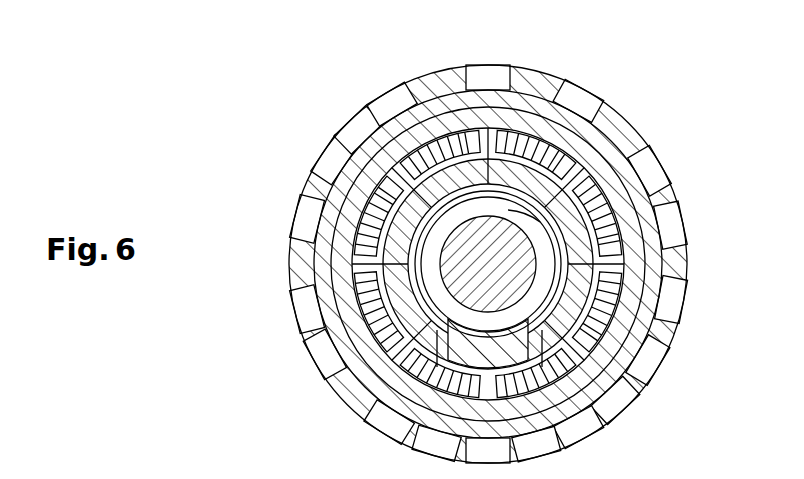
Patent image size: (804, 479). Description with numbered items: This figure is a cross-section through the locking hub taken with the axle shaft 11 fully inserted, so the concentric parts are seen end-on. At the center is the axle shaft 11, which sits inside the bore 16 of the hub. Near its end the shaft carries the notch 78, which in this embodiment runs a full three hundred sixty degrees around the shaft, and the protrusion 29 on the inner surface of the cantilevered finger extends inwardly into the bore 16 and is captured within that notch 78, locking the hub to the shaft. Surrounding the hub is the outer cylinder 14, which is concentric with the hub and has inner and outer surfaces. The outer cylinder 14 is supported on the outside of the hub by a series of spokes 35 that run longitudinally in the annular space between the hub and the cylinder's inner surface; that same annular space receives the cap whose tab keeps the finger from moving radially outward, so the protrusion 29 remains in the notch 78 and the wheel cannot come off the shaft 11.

The axle shaft 11 is at (517, 271).
The outer cylinder 14 is at (593, 157).
The bore 16 is at (476, 98).
The protrusion 29 is at (562, 300).
The spokes 35 is at (400, 172).
The notch 78 is at (512, 210).